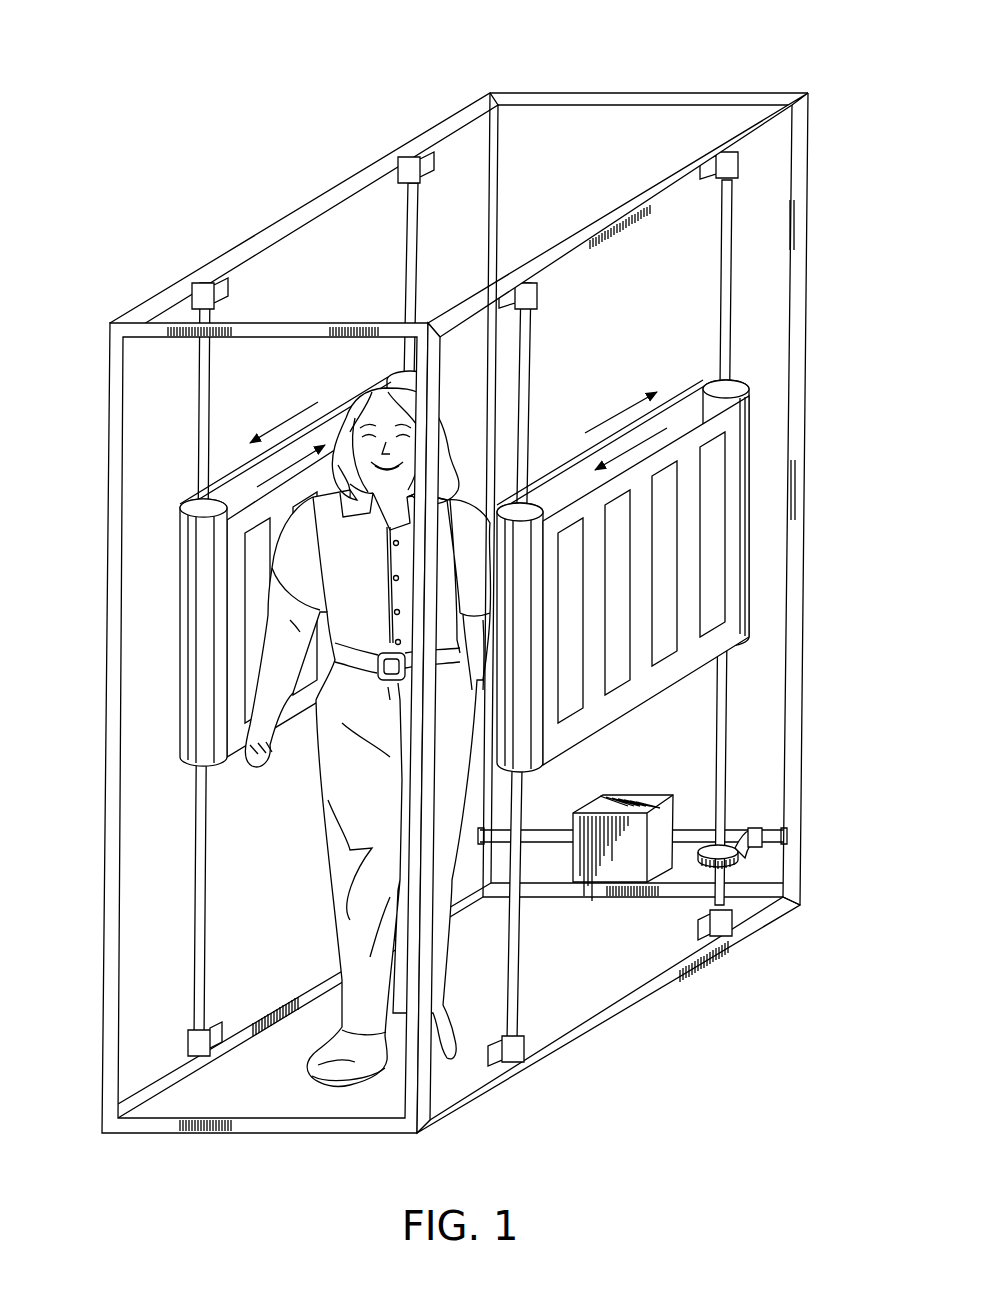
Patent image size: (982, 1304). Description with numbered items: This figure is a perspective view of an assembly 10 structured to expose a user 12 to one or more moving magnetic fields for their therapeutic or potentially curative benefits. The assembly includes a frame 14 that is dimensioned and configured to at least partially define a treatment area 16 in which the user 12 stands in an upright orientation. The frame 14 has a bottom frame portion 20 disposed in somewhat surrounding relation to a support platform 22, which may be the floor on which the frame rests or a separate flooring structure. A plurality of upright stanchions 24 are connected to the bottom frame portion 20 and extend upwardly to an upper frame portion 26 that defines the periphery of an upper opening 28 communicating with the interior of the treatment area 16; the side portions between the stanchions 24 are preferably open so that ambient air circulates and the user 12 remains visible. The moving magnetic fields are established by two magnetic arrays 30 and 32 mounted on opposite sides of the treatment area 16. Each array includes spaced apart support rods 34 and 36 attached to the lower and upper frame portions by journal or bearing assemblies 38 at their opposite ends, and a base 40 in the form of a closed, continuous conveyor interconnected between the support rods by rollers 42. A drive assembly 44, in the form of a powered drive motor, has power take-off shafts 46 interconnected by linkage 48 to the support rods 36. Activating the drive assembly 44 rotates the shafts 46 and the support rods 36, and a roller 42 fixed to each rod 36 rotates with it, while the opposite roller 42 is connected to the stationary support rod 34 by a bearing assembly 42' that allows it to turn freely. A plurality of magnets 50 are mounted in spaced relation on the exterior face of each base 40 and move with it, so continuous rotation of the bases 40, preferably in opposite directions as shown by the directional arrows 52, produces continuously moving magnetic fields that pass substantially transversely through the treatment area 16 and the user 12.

The assembly 10 is at (245, 108).
The user 12 is at (320, 843).
The frame 14 is at (812, 572).
The treatment area 16 is at (535, 177).
The bottom frame portion 20 is at (650, 990).
The support platform 22 is at (564, 952).
The upright stanchions 24 is at (490, 130).
The upper frame portion 26 is at (596, 93).
The upper opening 28 is at (265, 235).
The magnetic array 30 is at (678, 383).
The magnetic array 32 is at (232, 455).
The support rod 34 is at (203, 372).
The support rod 36 is at (409, 255).
The journal or bearing assemblies 38 is at (415, 162).
The base 40 is at (242, 766).
The rollers 42 is at (422, 534).
The bearing assembly 42' is at (405, 450).
The drive assembly 44 is at (626, 793).
The power take-off shafts 46 is at (545, 830).
The linkage 48 is at (760, 828).
The magnets 50 is at (255, 610).
The directional arrows 52 is at (258, 440).